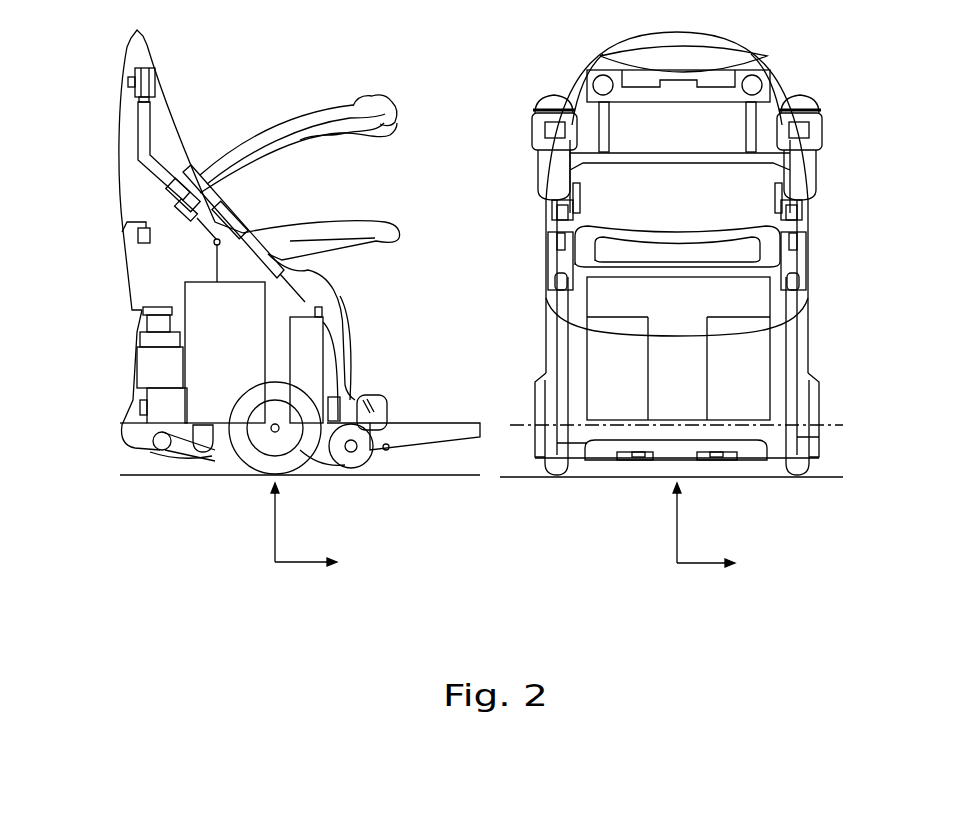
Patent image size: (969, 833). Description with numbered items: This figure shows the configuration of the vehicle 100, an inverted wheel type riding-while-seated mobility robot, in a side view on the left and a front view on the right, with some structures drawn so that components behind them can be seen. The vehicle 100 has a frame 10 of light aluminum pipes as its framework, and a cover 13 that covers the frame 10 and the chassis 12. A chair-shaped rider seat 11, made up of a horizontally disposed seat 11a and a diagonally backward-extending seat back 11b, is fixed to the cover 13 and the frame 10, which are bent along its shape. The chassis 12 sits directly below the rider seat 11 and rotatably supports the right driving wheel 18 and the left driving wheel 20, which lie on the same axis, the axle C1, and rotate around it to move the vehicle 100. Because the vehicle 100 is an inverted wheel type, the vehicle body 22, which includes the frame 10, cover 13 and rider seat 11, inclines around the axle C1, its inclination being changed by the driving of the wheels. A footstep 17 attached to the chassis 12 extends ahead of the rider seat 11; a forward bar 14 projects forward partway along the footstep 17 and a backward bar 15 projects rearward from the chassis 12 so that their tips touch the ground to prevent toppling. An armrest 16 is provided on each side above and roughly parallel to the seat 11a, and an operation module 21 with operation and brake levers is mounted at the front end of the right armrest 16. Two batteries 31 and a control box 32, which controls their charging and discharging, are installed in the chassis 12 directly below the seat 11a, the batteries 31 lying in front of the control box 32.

The vehicle 100 is at (107, 389).
The frame 10 is at (143, 119).
The rider seat 11 is at (327, 153).
The seat 11a is at (273, 237).
The seat back 11b is at (228, 200).
The chassis 12 is at (228, 490).
The cover 13 is at (118, 133).
The forward bar 14 is at (397, 470).
The backward bar 15 is at (177, 443).
The armrest 16 is at (245, 140).
The footstep 17 is at (425, 432).
The right driving wheel 18 is at (248, 467).
The left driving wheel 20 is at (797, 470).
The operation module 21 is at (372, 100).
The vehicle body 22 is at (110, 194).
The battery 31 is at (347, 470).
The control box 32 is at (300, 290).
The axle C1 is at (277, 427).